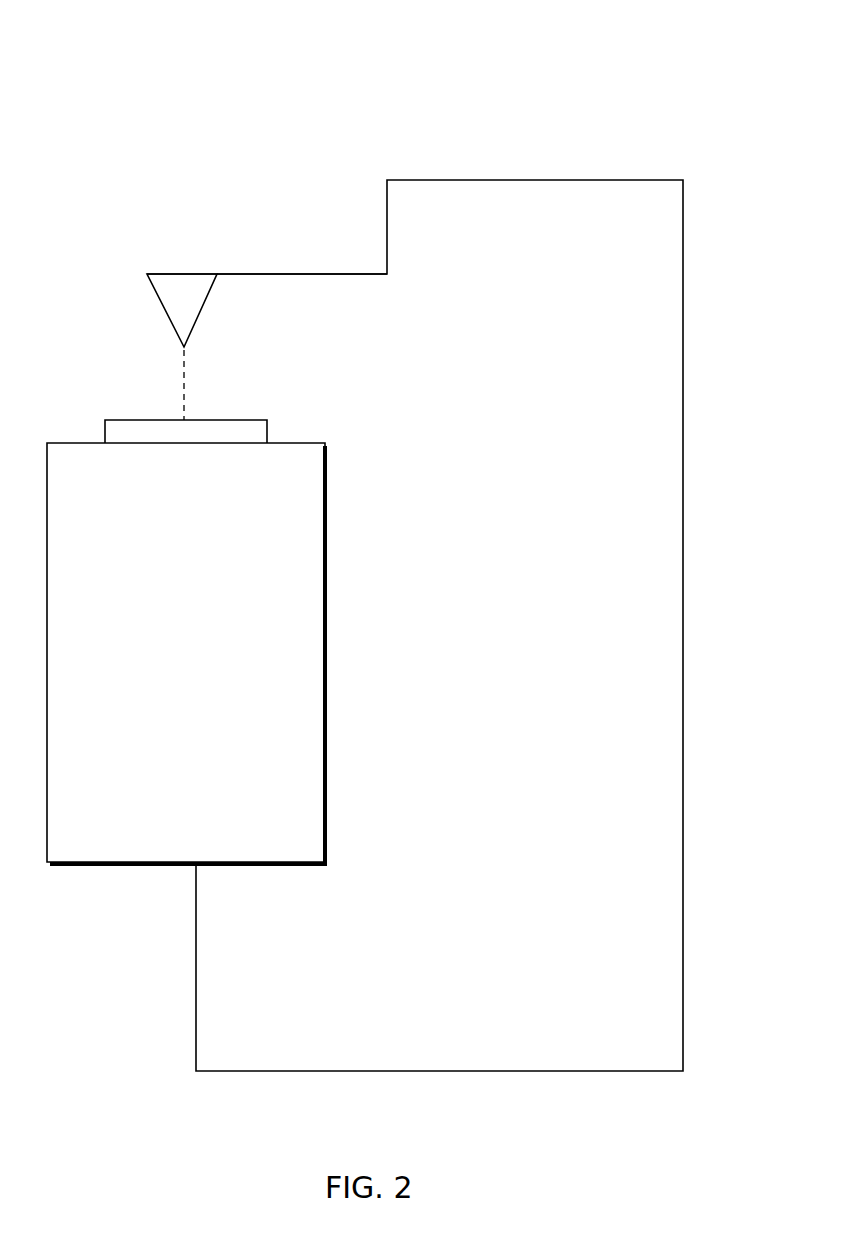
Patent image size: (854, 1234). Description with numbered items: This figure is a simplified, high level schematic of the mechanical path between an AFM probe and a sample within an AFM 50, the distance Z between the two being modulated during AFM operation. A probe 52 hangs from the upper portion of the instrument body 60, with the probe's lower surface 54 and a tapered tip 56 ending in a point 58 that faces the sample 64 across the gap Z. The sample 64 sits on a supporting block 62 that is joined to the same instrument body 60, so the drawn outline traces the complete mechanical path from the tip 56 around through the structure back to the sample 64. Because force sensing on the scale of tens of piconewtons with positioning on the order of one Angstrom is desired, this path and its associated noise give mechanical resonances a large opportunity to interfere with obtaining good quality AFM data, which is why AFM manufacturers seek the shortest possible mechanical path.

The AFM 50 is at (651, 75).
The probe 52 is at (193, 238).
The tool shoulder surface 54 is at (328, 274).
The tool pin 56 is at (196, 300).
The pin tip 58 is at (183, 348).
The tool body 60 is at (514, 180).
The workpiece block 62 is at (320, 766).
The sample 64 is at (228, 426).